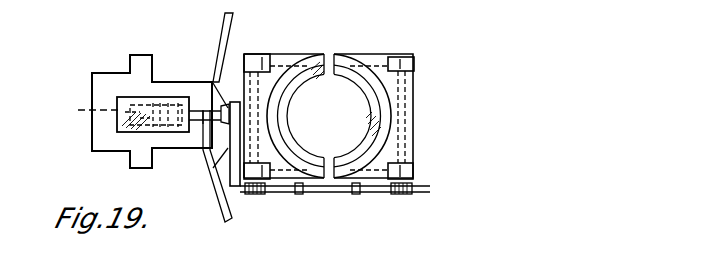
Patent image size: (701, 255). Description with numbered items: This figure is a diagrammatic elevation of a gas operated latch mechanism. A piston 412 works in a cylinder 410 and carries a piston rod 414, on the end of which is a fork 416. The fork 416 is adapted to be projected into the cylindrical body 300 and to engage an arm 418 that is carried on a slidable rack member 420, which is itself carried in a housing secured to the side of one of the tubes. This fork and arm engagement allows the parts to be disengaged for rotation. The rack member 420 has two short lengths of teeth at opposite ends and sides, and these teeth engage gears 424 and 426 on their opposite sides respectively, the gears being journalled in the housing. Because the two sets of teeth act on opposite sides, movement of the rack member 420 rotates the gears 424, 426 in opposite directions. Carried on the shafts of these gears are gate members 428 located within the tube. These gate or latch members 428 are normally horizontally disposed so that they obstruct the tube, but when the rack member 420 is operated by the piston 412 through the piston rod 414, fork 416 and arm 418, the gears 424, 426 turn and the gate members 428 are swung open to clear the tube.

The cylindrical body 300 is at (234, 23).
The cylinder 410 is at (128, 111).
The piston 412 is at (163, 134).
The piston rod 414 is at (222, 180).
The fork 416 is at (222, 100).
The arm 418 is at (226, 180).
The rack member 420 is at (290, 189).
The gear 424 is at (252, 195).
The gear 426 is at (405, 195).
The gate members 428 is at (372, 112).